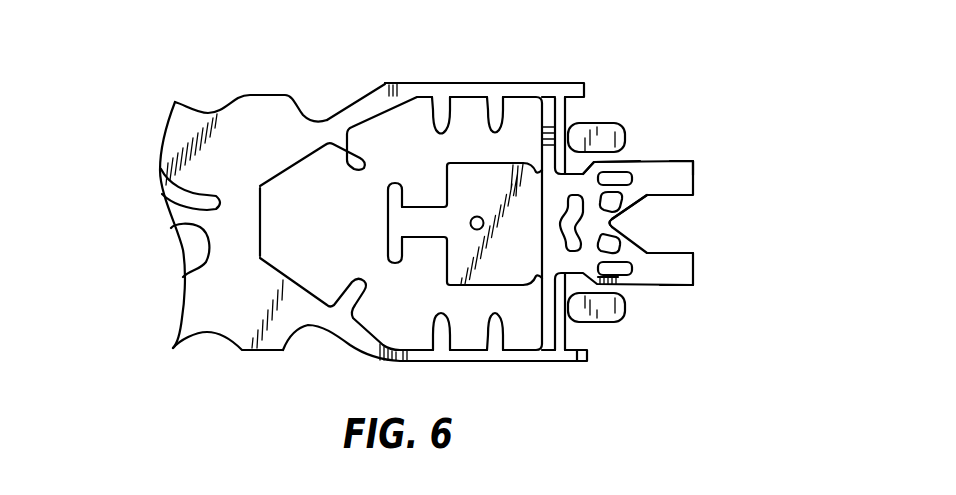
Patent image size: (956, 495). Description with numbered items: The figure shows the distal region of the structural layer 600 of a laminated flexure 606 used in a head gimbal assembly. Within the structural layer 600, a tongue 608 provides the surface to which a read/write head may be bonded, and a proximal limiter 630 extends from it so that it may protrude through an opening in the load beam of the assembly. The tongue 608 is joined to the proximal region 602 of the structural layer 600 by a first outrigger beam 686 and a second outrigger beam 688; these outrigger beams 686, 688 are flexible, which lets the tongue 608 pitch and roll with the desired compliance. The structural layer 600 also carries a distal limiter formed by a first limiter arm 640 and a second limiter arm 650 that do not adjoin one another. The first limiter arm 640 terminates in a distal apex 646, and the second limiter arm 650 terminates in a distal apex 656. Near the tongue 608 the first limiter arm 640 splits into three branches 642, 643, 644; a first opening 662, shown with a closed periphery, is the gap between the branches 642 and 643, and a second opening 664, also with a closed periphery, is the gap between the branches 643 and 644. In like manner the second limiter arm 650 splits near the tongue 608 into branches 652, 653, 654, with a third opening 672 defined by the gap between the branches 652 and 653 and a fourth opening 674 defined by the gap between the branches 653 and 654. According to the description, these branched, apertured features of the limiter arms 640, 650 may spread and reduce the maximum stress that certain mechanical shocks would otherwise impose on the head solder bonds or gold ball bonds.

The structural layer 600 is at (213, 112).
The proximal region 602 is at (203, 313).
The flexure 606 is at (259, 97).
The first outrigger beam 686 is at (358, 108).
The second outrigger beam 688 is at (350, 336).
The proximal limiter 630 is at (412, 207).
The tongue 608 is at (460, 188).
The second opening 664 is at (600, 206).
The branch 643 is at (567, 193).
The first opening 662 is at (612, 176).
The branch 642 is at (620, 170).
The first limiter arm 640 is at (663, 161).
The distal apex 646 is at (682, 178).
The branch 644 is at (642, 210).
The branch 654 is at (630, 235).
The distal apex 656 is at (693, 266).
The second limiter arm 650 is at (680, 286).
The branch 653 is at (633, 275).
The branch 652 is at (618, 284).
The fourth opening 674 is at (598, 263).
The third opening 672 is at (603, 253).